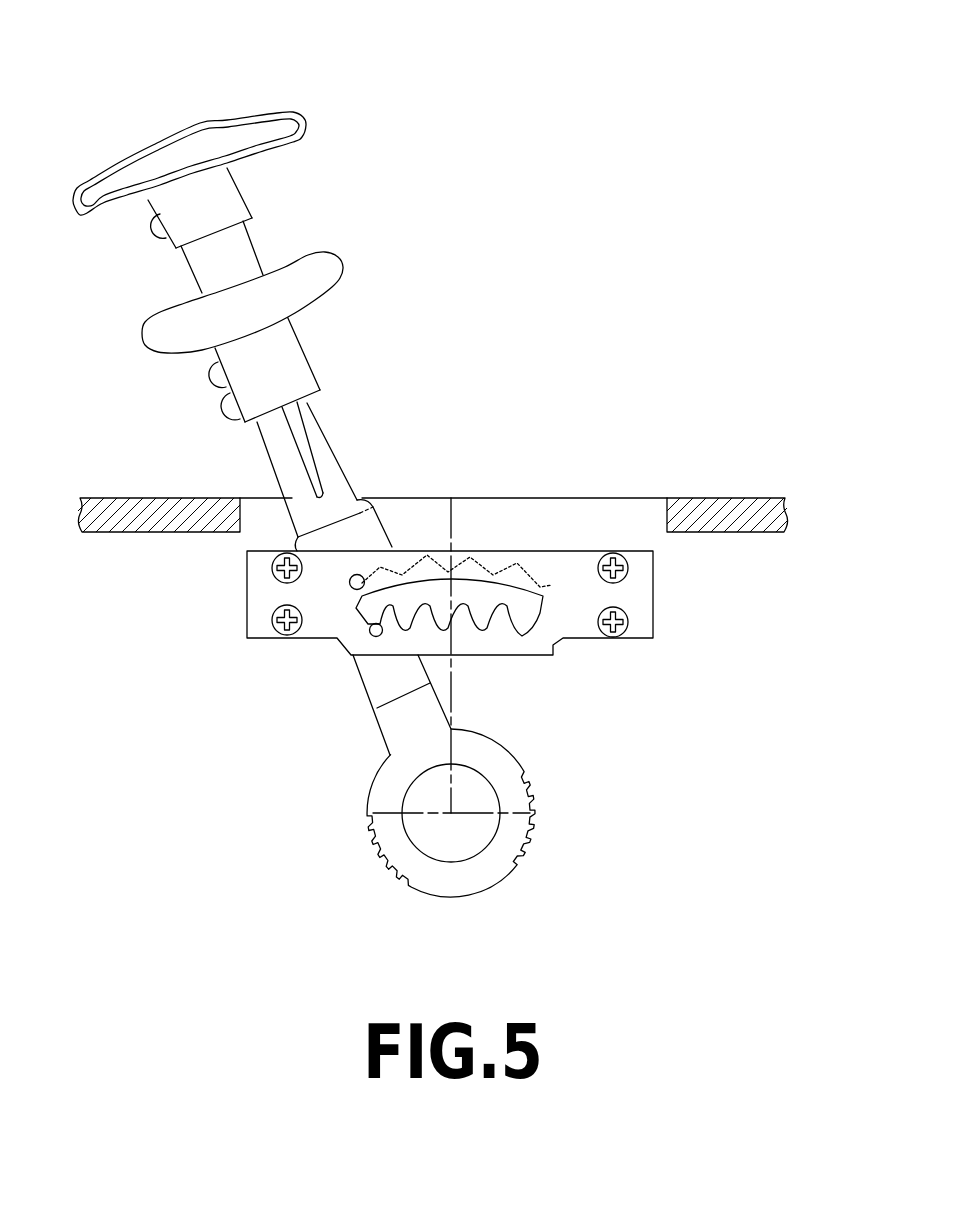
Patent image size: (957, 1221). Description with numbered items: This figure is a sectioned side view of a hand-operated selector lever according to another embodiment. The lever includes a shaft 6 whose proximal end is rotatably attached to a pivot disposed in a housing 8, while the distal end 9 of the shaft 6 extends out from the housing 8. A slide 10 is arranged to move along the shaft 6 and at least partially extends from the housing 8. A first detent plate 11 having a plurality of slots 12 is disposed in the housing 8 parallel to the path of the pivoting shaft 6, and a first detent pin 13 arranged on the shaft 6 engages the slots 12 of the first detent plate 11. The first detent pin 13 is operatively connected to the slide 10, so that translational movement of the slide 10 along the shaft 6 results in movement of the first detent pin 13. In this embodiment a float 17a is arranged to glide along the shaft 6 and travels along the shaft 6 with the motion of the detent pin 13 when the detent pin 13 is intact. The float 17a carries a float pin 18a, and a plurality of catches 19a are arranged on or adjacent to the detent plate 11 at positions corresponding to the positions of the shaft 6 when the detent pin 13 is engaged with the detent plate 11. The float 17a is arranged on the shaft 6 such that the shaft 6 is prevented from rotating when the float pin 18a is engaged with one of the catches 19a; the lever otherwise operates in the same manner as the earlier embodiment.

The shaft 6 is at (323, 425).
The housing 8 is at (118, 505).
The distal end 9 is at (236, 114).
The slide 10 is at (331, 266).
The first detent plate 11 is at (256, 619).
The slots 12 is at (373, 637).
The first detent pin 13 is at (374, 631).
The float 17a is at (368, 528).
The float pin 18a is at (348, 580).
The catches 19a is at (402, 575).